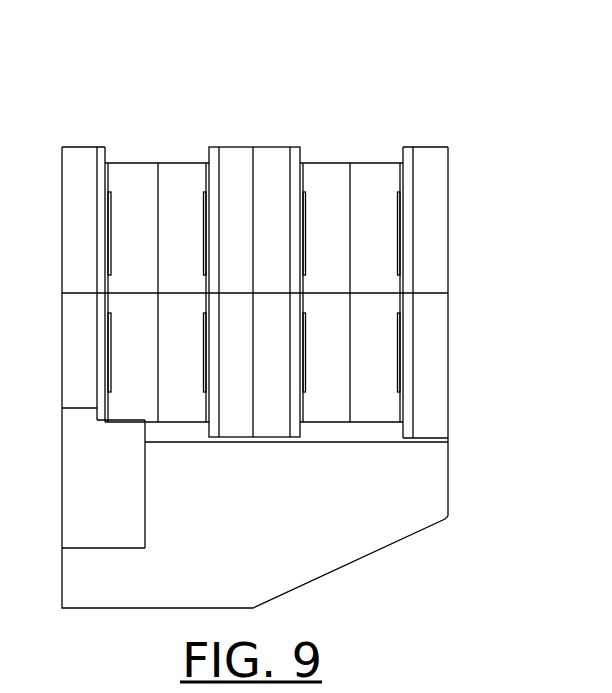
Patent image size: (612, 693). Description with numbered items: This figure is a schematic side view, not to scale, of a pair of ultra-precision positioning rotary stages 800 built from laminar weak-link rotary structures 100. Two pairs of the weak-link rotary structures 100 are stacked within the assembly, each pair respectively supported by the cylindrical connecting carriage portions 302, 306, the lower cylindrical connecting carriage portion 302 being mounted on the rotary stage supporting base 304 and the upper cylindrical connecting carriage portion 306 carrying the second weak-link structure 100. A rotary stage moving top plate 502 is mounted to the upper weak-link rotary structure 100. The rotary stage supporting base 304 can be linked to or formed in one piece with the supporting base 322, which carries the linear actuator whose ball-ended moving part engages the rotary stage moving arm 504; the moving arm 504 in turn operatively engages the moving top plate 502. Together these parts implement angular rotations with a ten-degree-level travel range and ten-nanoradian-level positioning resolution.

The pair of ultra-precision positioning rotary stages 800 is at (331, 56).
The laminar weak-link rotary structure 100 is at (114, 160).
The lower cylindrical connecting carriage portion 302 is at (330, 398).
The rotary stage supporting base 304 is at (432, 172).
The upper cylindrical connecting carriage portion 306 is at (382, 398).
The supporting base 322 is at (335, 518).
The rotary stage moving top plate 502 is at (83, 193).
The rotary stage moving arm 504 is at (105, 505).